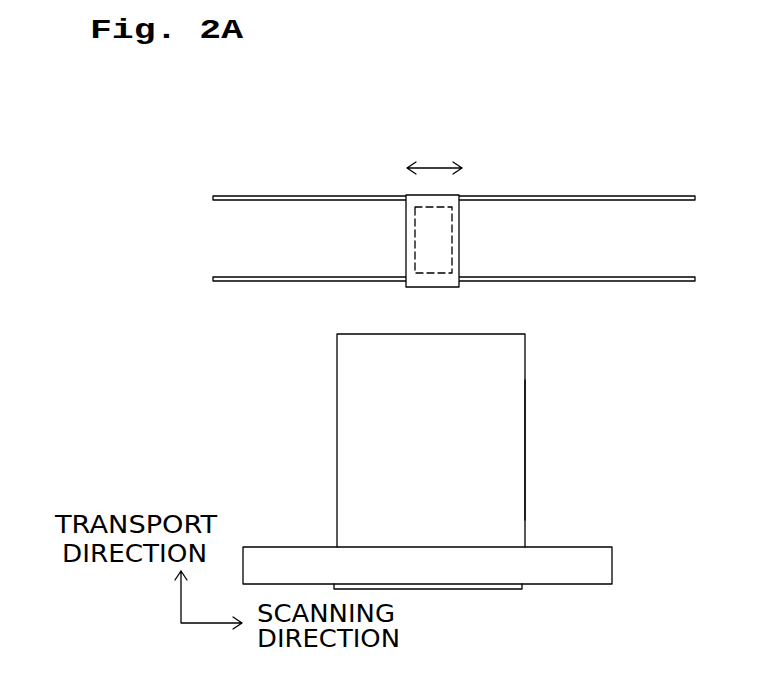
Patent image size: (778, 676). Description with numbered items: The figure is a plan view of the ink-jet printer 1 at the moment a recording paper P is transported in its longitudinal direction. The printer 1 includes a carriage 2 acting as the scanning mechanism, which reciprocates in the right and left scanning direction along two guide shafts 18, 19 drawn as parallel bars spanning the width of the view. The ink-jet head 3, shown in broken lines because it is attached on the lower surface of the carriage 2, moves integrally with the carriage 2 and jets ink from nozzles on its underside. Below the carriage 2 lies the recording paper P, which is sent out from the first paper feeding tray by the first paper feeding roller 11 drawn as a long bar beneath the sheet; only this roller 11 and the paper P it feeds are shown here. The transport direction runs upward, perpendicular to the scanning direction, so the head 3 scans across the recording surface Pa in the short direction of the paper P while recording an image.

The ink-jet printer 1 is at (627, 82).
The carriage 2 is at (410, 195).
The ink-jet head 3 is at (452, 224).
The guide shaft 18 is at (622, 196).
The guide shaft 19 is at (628, 281).
The recording paper P is at (560, 396).
The recording surface Pa is at (514, 457).
The first paper feeding roller 11 is at (601, 566).